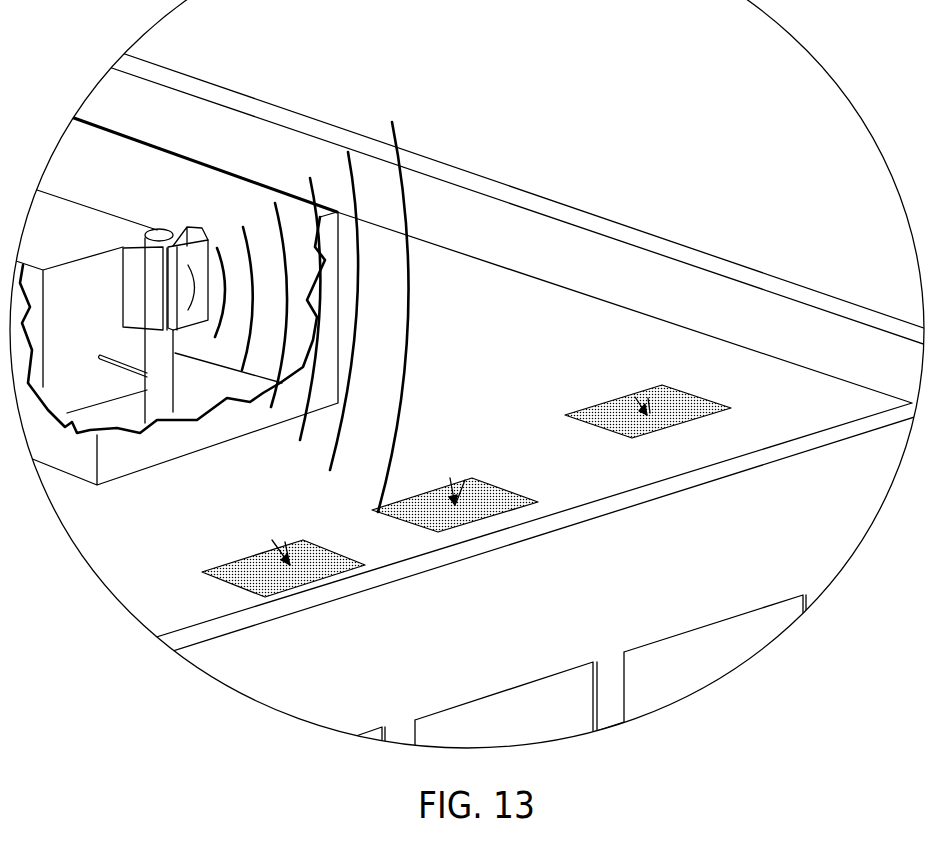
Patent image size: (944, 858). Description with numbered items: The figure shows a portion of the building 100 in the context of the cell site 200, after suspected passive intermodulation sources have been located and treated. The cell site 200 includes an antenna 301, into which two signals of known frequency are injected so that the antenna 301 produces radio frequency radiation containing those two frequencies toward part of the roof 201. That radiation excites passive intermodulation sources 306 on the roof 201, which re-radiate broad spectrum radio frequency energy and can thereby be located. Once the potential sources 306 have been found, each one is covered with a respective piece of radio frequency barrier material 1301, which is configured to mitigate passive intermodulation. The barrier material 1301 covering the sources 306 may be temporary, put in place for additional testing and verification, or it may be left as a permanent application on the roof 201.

The building 100 is at (522, 185).
The cell site 200 is at (227, 282).
The roof 201 is at (520, 443).
The antenna 301 is at (106, 356).
The passive intermodulation sources 306 is at (510, 512).
The barrier material 1301 is at (461, 457).